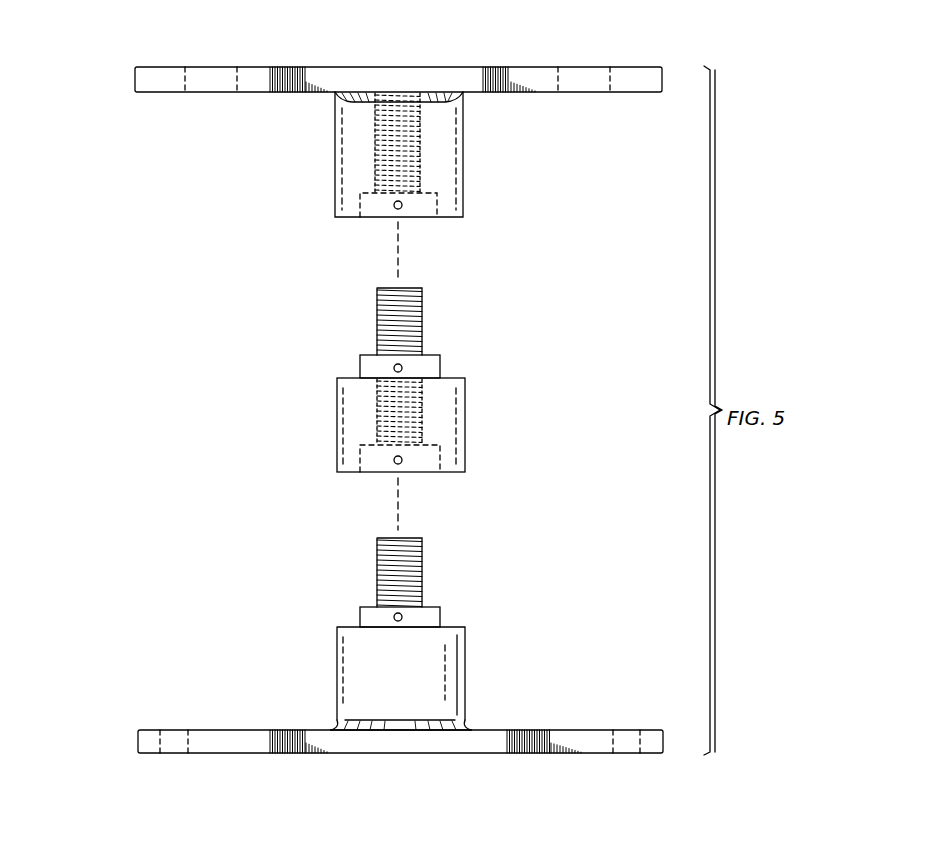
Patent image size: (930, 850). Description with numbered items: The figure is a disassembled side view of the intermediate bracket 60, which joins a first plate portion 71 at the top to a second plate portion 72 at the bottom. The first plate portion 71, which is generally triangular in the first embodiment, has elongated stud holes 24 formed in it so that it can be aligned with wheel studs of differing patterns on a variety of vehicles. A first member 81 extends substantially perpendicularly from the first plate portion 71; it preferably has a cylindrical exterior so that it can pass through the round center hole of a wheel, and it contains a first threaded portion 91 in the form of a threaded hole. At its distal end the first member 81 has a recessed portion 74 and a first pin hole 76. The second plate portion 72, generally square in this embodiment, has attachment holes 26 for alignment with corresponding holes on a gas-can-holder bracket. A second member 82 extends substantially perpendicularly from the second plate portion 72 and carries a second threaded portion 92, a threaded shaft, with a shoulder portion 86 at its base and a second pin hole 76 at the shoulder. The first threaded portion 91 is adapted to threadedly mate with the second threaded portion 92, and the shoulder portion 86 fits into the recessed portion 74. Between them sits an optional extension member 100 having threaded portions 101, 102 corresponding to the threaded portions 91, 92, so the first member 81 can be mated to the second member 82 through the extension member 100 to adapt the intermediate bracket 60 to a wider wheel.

The stud hole 24 is at (196, 80).
The attachment hole 26 is at (165, 746).
The intermediate bracket 60 is at (58, 292).
The first plate portion 71 is at (440, 67).
The second plate portion 72 is at (362, 754).
The recessed portion 74 is at (437, 215).
The pin hole 76 is at (394, 208).
The first member 81 is at (463, 160).
The second member 82 is at (337, 672).
The shoulder portion 86 is at (360, 618).
The first threaded portion 91 is at (375, 150).
The second threaded portion 92 is at (422, 560).
The extension member 100 is at (480, 421).
The threaded portion 101 is at (422, 304).
The threaded portion 102 is at (377, 405).